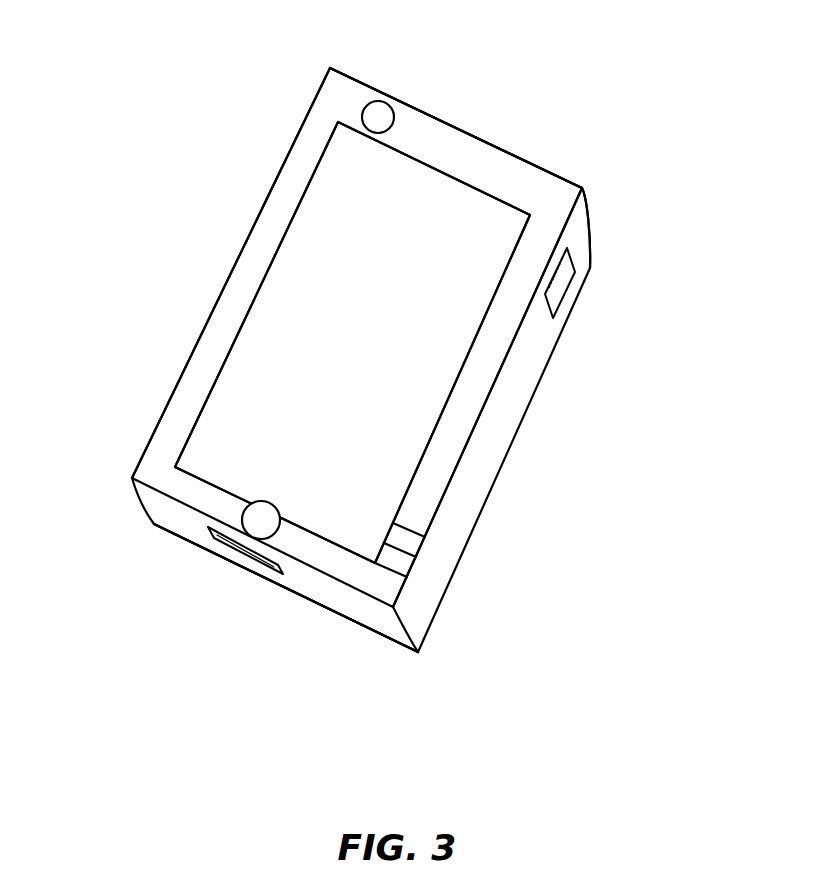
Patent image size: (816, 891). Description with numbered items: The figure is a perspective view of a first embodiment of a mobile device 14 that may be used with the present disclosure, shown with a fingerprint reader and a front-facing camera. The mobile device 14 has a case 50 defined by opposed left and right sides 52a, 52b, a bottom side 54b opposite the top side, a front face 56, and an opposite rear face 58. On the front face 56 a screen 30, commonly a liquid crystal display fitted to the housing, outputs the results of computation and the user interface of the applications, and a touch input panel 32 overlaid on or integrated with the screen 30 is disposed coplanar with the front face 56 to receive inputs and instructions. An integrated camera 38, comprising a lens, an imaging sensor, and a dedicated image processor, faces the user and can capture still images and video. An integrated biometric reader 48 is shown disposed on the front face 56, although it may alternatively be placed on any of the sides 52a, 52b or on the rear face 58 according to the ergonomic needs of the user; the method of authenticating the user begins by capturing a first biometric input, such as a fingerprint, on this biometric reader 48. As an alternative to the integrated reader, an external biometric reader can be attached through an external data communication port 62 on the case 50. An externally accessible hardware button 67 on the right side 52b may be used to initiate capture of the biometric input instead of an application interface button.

The mobile device 14 is at (522, 395).
The screen 30 is at (325, 298).
The touch input panel 32 is at (352, 342).
The camera 38 is at (377, 100).
The biometric reader 48 is at (417, 558).
The case 50 is at (590, 228).
The left side 52a is at (188, 333).
The right side 52b is at (485, 433).
The bottom side 54b is at (456, 113).
The front face 56 is at (530, 182).
The rear face 58 is at (387, 639).
The external data communication port 62 is at (247, 563).
The hardware button 67 is at (570, 289).